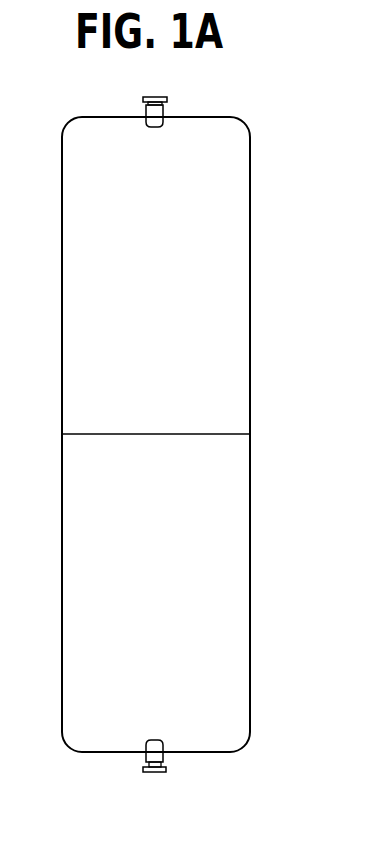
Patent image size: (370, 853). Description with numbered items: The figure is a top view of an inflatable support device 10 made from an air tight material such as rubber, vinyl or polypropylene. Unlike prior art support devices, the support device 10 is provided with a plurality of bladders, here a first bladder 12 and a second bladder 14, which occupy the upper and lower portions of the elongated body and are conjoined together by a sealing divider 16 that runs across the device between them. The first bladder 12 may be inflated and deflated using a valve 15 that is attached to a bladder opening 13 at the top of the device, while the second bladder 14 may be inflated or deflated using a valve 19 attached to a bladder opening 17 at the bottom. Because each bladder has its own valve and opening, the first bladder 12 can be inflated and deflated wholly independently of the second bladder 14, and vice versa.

The support device 10 is at (200, 97).
The first bladder 12 is at (165, 282).
The bladder opening 13 is at (153, 128).
The second bladder 14 is at (165, 597).
The valve 15 is at (151, 95).
The sealing divider 16 is at (217, 433).
The bladder opening 17 is at (147, 741).
The valve 19 is at (155, 775).